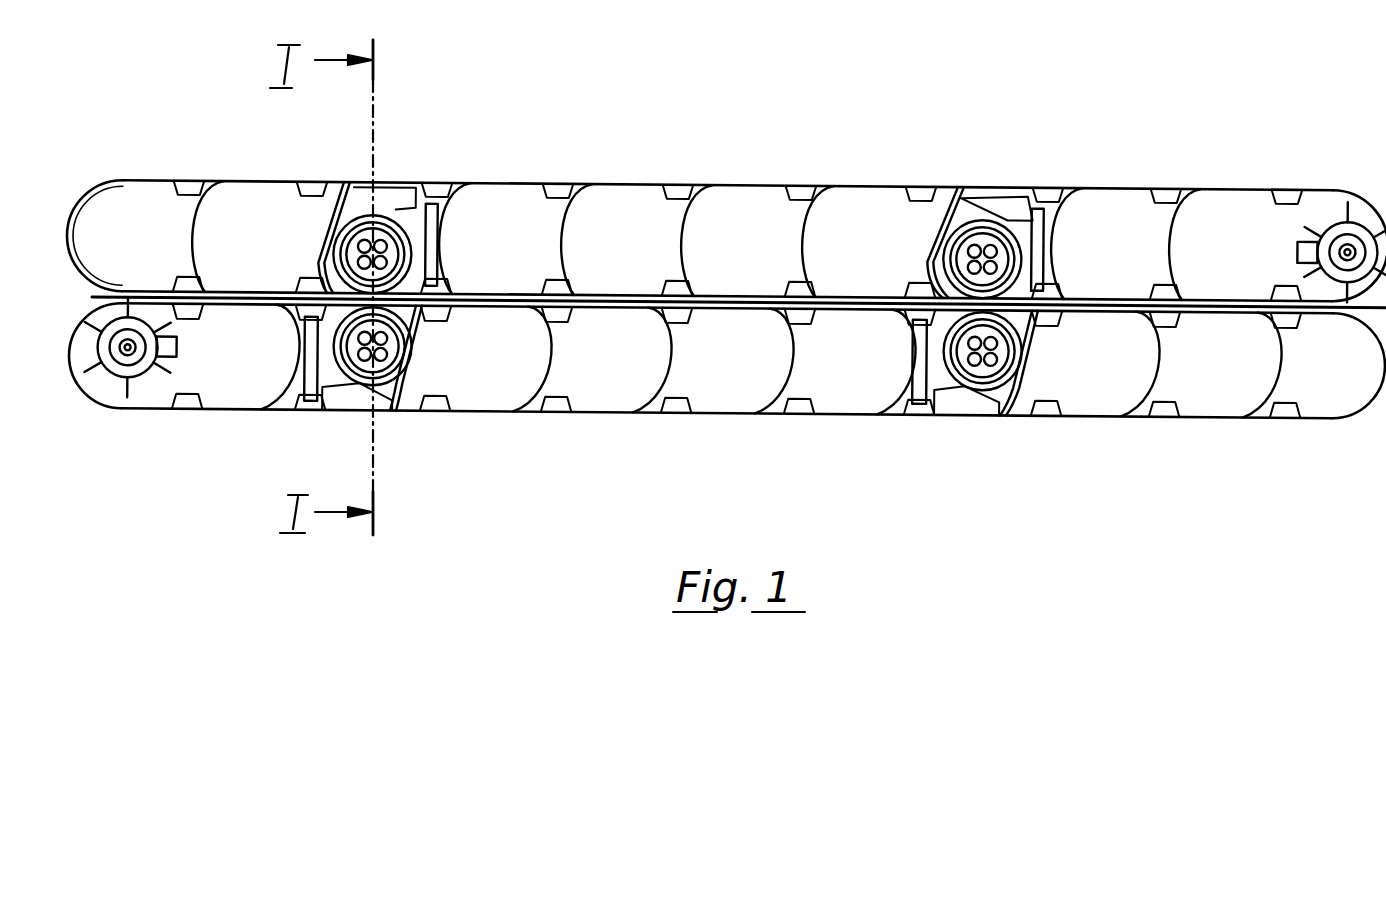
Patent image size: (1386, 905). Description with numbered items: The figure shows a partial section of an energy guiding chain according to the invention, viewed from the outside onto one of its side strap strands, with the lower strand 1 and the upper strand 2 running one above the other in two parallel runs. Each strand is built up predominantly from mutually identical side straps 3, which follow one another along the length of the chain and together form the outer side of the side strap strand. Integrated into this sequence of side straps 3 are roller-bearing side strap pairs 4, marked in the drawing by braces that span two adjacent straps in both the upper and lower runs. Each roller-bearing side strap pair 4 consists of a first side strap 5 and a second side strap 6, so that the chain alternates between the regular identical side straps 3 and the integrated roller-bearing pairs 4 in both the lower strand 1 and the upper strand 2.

The lower strand 1 is at (718, 492).
The upper strand 2 is at (742, 169).
The side straps 3 is at (660, 213).
The roller-bearing side strap pairs 4 is at (1070, 176).
The first side straps 5 is at (893, 225).
The second side straps 6 is at (1006, 221).